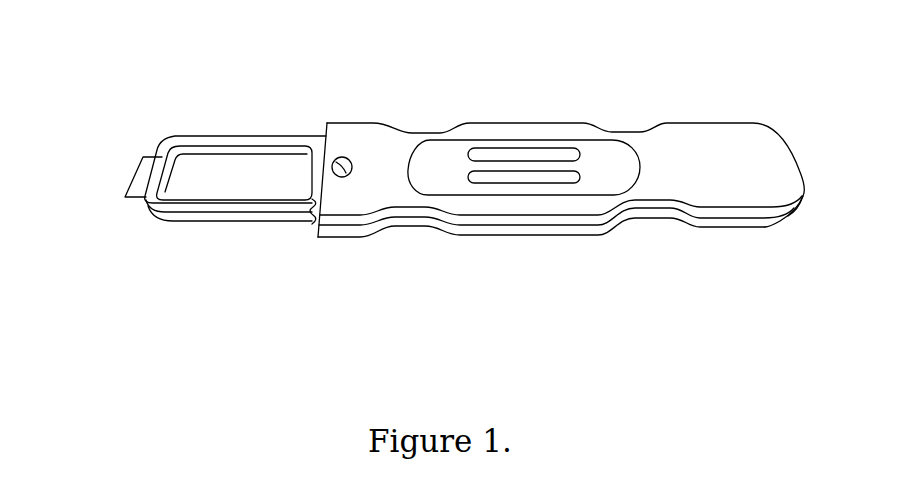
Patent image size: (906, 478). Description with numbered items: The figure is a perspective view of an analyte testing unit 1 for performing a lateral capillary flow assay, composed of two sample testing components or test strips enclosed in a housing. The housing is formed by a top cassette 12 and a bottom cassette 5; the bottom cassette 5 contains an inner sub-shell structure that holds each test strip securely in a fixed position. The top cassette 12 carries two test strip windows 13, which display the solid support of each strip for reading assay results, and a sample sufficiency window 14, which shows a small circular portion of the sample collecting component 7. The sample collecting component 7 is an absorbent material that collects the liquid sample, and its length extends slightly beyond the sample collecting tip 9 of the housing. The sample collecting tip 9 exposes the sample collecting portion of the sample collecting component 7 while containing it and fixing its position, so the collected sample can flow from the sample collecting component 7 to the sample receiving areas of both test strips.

The analyte testing unit 1 is at (687, 122).
The bottom cassette 5 is at (770, 229).
The sample collecting component 7 is at (137, 174).
The sample collecting tip 9 is at (233, 141).
The top cassette 12 is at (791, 216).
The test strip windows 13 is at (518, 153).
The sample sufficiency window 14 is at (340, 157).